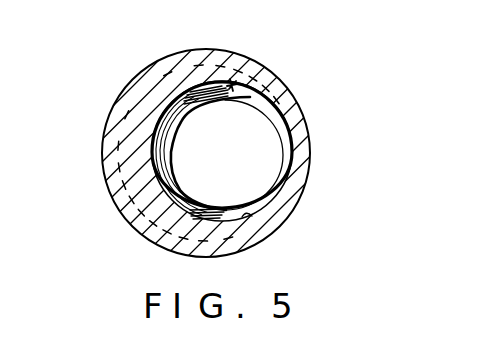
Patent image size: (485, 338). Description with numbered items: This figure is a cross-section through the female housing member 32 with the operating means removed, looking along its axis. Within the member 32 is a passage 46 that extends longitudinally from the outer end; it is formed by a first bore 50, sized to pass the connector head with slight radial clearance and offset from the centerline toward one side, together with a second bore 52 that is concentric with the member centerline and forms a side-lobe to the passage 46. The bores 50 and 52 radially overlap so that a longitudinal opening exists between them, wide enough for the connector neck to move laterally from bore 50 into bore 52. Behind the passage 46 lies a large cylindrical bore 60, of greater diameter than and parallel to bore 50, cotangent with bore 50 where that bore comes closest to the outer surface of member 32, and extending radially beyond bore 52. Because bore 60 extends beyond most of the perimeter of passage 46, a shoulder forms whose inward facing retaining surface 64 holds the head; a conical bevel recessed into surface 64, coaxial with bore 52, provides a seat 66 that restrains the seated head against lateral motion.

The member 32 is at (133, 114).
The passage 46 is at (277, 149).
The first longitudinally extending bore 50 is at (264, 107).
The second longitudinally extending bore 52 is at (174, 160).
The large cylindrical bore 60 is at (248, 217).
The retaining surface 64 is at (232, 84).
The seat 66 is at (178, 101).